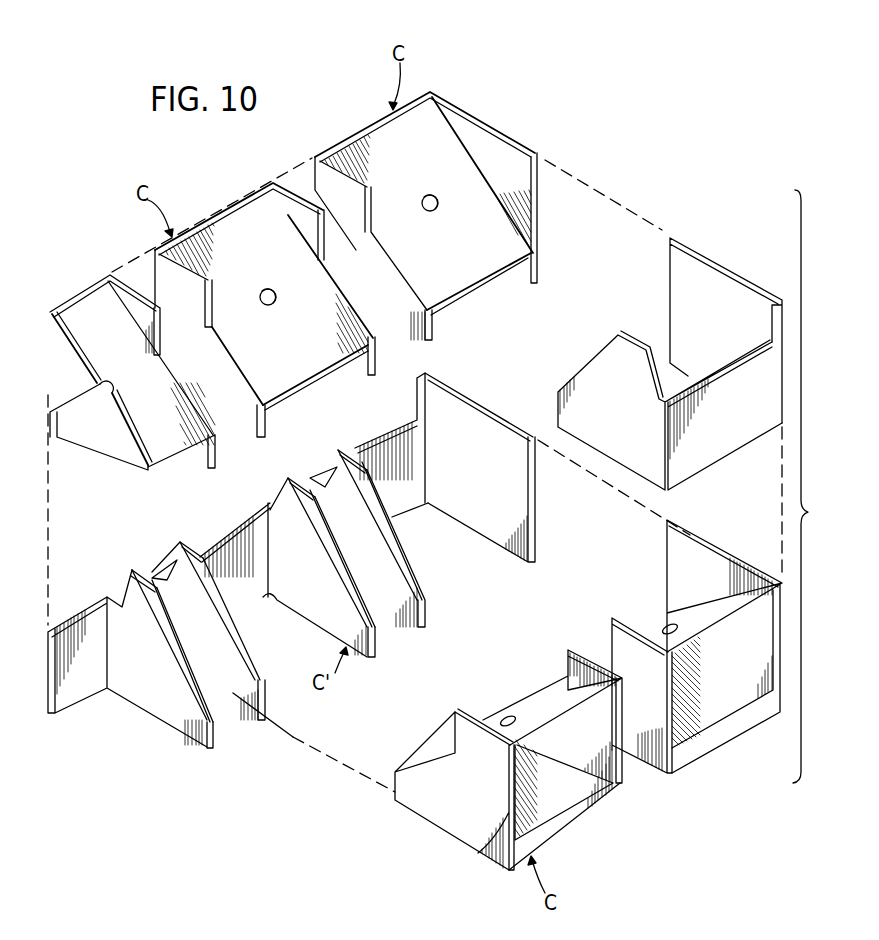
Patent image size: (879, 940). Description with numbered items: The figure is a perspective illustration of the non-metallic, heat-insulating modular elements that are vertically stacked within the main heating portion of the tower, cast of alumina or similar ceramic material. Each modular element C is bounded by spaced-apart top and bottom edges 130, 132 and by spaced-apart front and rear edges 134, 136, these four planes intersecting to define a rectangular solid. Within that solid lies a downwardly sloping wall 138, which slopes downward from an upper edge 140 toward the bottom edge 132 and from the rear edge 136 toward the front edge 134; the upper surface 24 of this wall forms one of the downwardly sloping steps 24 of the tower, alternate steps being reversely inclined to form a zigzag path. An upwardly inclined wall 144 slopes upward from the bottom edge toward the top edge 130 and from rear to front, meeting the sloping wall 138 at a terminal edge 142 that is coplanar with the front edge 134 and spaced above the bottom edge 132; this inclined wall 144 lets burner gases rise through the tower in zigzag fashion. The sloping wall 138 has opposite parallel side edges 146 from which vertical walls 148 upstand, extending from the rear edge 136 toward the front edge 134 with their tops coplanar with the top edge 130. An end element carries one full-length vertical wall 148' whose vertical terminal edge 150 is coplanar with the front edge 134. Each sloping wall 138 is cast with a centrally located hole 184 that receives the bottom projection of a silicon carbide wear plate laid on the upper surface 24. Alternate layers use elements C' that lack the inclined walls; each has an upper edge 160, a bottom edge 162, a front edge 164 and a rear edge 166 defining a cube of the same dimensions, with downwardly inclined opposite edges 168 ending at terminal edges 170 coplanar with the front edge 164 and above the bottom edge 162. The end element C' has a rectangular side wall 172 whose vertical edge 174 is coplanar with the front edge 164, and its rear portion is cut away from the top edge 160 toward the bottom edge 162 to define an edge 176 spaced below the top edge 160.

The steps 24 is at (197, 257).
The top edge 130 is at (233, 247).
The bottom edge 132 is at (258, 438).
The front edge 134 is at (533, 270).
The rear edge 136 is at (150, 277).
The downwardly sloping wall 138 is at (193, 257).
The upper edge 140 is at (203, 237).
The terminal edge 142 is at (482, 287).
The upwardly inclined wall 144 is at (88, 450).
The opposite parallel edges 146 is at (462, 147).
The vertical walls 148 is at (213, 291).
The vertical wall 148' is at (445, 211).
The vertical terminal edge 150 is at (540, 183).
The upper edge 160 is at (188, 540).
The bottom edge 162 is at (255, 721).
The front edge 164 is at (270, 703).
The rear edge 166 is at (712, 455).
The downwardly inclined opposite edges 168 is at (240, 633).
The terminal edges 170 is at (262, 682).
The rectangular side wall 172 is at (477, 422).
The vertical edge 174 is at (538, 508).
The edge 176 is at (222, 530).
The hole 184 is at (432, 211).